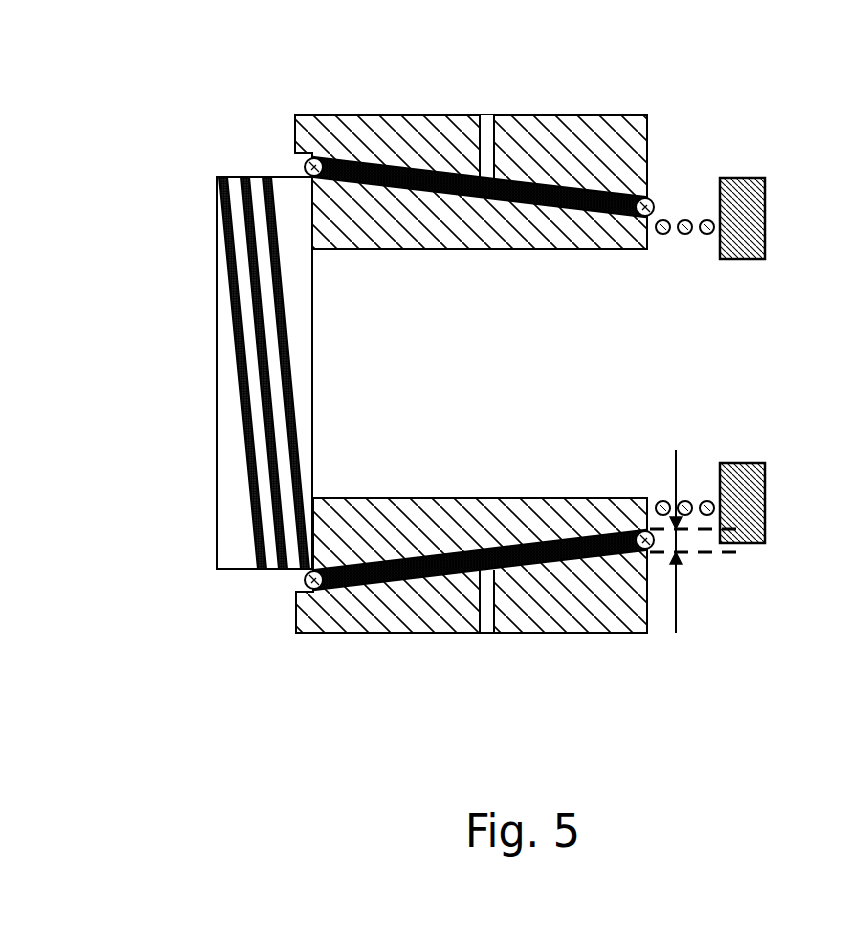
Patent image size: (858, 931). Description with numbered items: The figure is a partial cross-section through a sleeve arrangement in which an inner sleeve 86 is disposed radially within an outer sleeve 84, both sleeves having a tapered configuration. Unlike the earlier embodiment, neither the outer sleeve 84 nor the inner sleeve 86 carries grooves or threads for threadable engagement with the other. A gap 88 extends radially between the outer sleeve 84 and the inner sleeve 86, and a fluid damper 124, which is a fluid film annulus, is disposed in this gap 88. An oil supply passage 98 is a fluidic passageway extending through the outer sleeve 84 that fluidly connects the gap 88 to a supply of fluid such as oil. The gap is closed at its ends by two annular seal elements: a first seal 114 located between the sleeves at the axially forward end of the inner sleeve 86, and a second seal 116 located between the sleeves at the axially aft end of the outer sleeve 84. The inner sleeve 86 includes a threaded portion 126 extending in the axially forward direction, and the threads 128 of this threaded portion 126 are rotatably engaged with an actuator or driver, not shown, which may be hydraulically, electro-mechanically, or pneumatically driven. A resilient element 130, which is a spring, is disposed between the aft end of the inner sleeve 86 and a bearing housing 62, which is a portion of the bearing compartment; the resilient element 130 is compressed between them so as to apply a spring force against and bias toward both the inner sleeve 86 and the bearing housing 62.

The bearing housing 62 is at (766, 208).
The outer sleeve 84 is at (550, 114).
The inner sleeve 86 is at (572, 250).
The gap 88 is at (676, 592).
The oil supply passage 98 is at (497, 138).
The first seal 114 is at (316, 158).
The second seal 116 is at (651, 199).
The fluid damper 124 is at (530, 205).
The threaded portion 126 is at (209, 325).
The threads 128 is at (250, 497).
The resilient element 130 is at (689, 220).